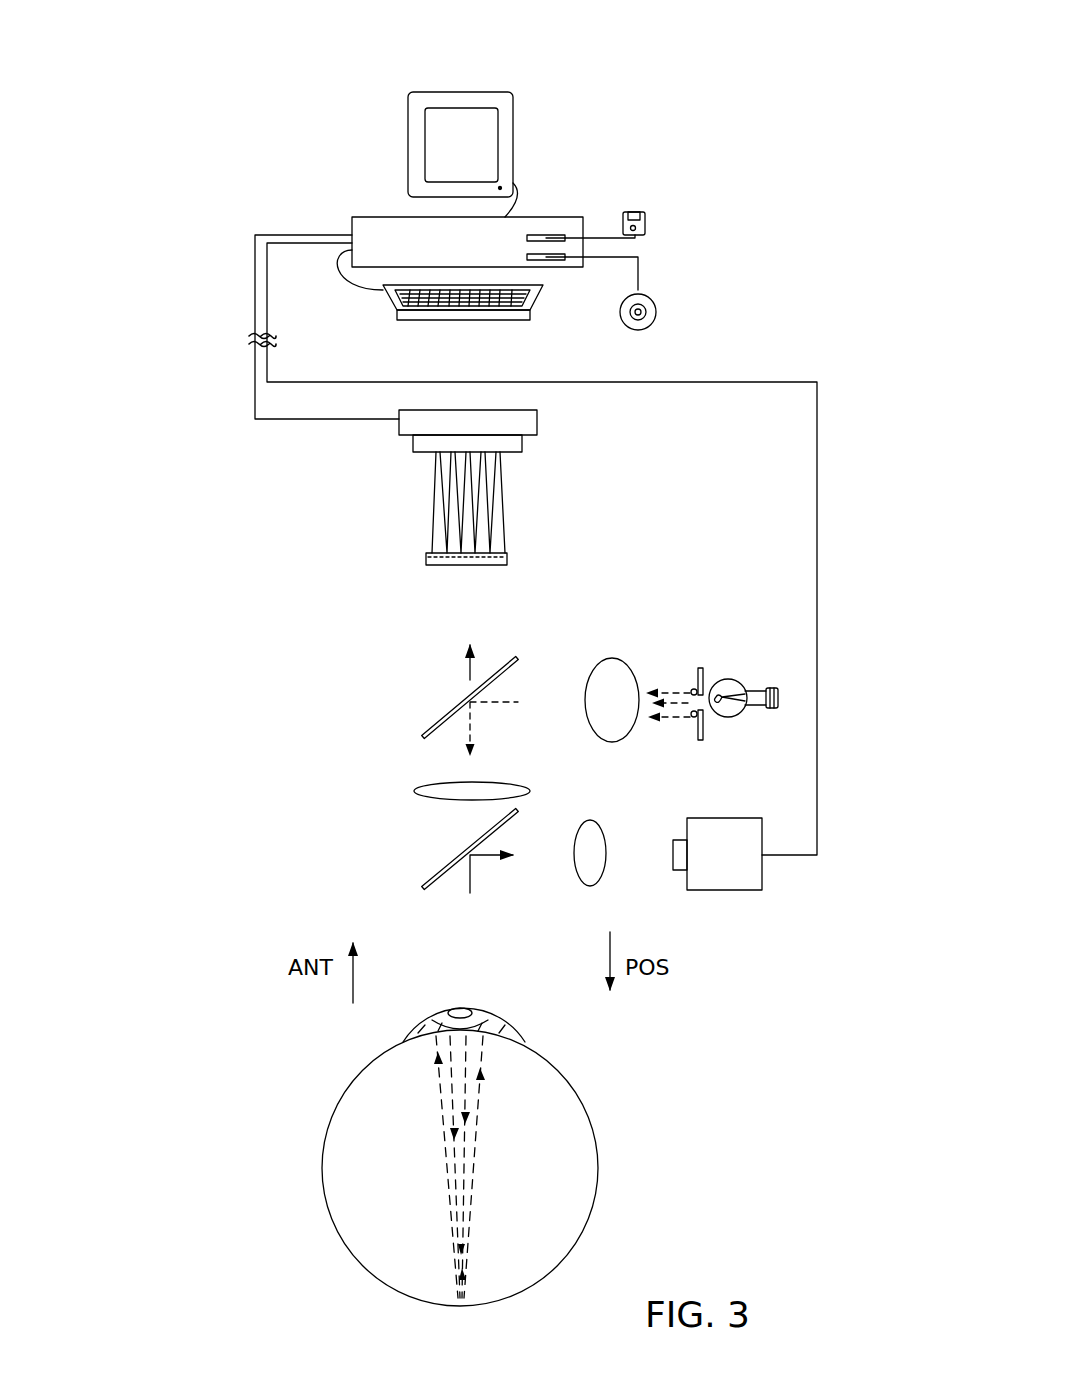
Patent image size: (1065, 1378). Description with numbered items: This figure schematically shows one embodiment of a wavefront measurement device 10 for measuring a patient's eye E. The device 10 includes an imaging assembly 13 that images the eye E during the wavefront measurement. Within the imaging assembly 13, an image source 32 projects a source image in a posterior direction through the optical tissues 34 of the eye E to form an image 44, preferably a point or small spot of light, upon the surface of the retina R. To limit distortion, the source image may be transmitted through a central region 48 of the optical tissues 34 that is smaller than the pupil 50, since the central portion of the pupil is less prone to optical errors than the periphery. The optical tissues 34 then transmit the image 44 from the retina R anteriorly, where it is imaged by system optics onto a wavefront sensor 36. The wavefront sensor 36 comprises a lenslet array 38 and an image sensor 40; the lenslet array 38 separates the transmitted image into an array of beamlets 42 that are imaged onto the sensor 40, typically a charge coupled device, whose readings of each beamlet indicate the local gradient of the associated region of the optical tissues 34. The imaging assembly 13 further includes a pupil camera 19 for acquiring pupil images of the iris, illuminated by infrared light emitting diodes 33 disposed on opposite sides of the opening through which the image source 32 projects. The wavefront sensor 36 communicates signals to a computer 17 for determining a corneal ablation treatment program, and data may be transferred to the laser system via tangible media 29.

The wavefront measurement device 10 is at (86, 100).
The computer 17 is at (628, 160).
The tangible media 29 is at (645, 222).
The wavefront sensor 36 is at (469, 492).
The image sensor 40 is at (420, 452).
The beamlets 42 is at (465, 492).
The lenslet array 38 is at (427, 558).
The image source 32 is at (712, 697).
The infrared light emitting diodes 33 is at (691, 676).
The imaging assembly 13 is at (797, 766).
The pupil camera 19 is at (750, 890).
The optical tissues 34 is at (466, 984).
The central region 48 is at (455, 1008).
The pupil 50 is at (432, 1015).
The image 44 is at (458, 1298).
The eye E is at (445, 1116).
The retina R is at (490, 1285).